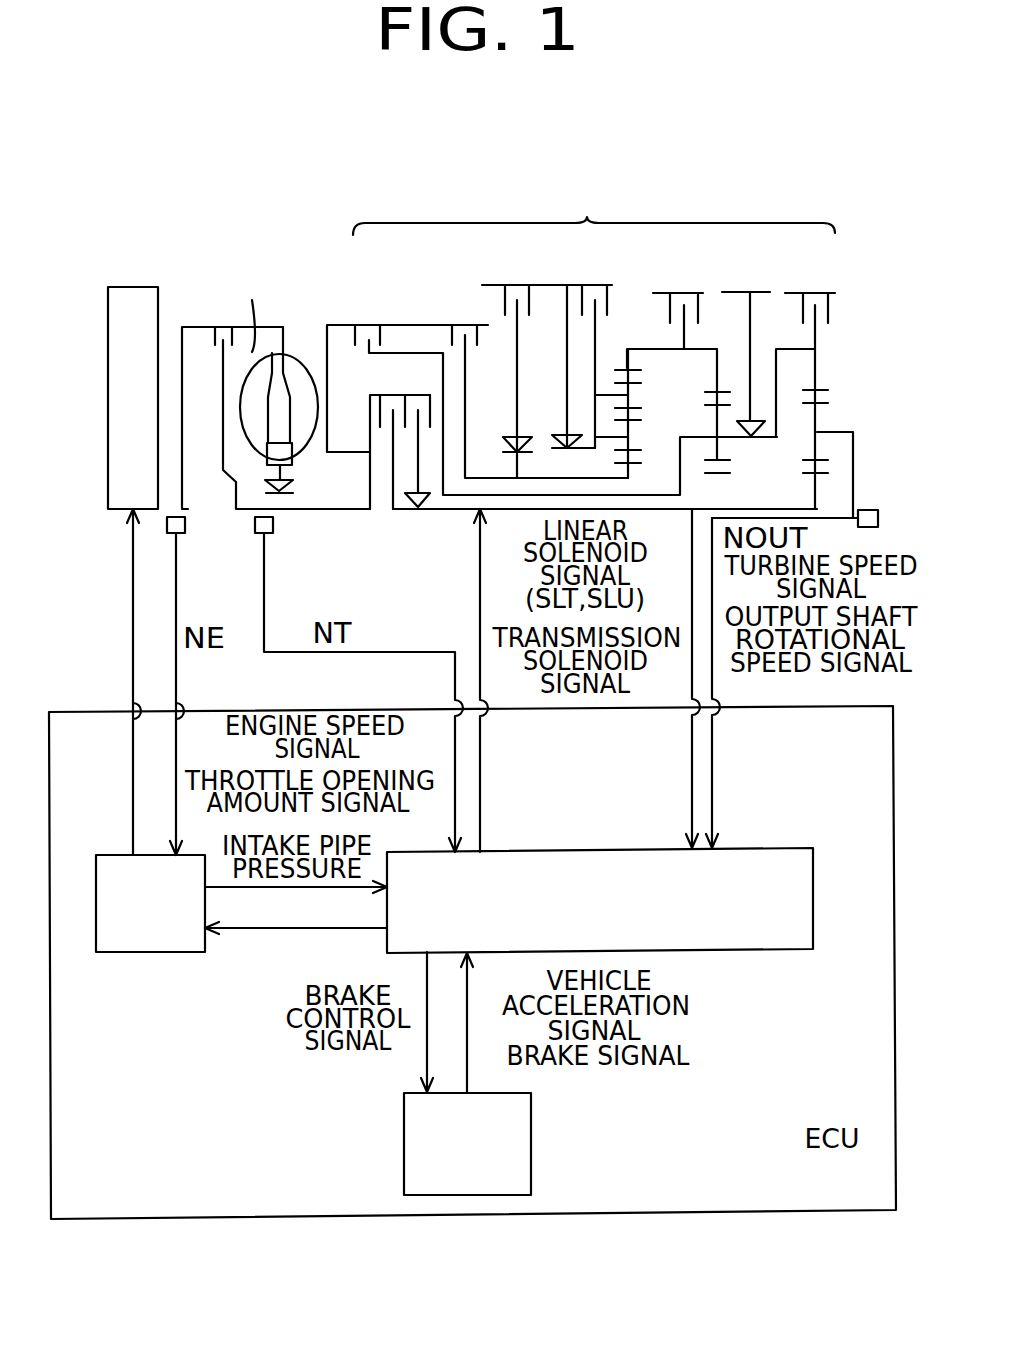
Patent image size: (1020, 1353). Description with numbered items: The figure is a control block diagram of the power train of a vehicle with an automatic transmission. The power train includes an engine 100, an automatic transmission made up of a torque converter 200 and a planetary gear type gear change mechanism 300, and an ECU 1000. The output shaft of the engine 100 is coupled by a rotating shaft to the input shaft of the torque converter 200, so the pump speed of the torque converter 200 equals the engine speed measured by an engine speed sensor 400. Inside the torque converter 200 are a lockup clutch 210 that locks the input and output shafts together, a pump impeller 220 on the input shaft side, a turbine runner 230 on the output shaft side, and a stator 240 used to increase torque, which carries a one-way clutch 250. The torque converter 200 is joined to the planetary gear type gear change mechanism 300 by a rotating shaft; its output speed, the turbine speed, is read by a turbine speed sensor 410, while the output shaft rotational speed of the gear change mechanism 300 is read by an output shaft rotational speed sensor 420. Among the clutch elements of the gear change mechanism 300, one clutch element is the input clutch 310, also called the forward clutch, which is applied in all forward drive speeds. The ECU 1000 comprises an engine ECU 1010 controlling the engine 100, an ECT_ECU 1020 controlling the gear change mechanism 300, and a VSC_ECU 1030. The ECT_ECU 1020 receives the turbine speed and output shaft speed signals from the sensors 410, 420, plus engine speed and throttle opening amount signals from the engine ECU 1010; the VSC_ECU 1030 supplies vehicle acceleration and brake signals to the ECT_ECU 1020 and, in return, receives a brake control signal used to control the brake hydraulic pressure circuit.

The engine 100 is at (132, 287).
The torque converter 200 is at (312, 336).
The lockup clutch 210 is at (217, 343).
The pump impeller 220 is at (292, 445).
The turbine runner 230 is at (257, 353).
The stator 240 is at (268, 446).
The one-way clutch 250 is at (291, 489).
The planetary gear type gear change mechanism 300 is at (581, 365).
The input clutch 310 is at (408, 397).
The engine speed sensor 400 is at (185, 525).
The turbine speed sensor 410 is at (275, 525).
The output shaft rotational speed sensor 420 is at (898, 495).
The ECU 1000 is at (768, 1213).
The engine ECU 1010 is at (120, 854).
The ECT_ECU 1020 is at (780, 822).
The VSC_ECU 1030 is at (532, 1123).